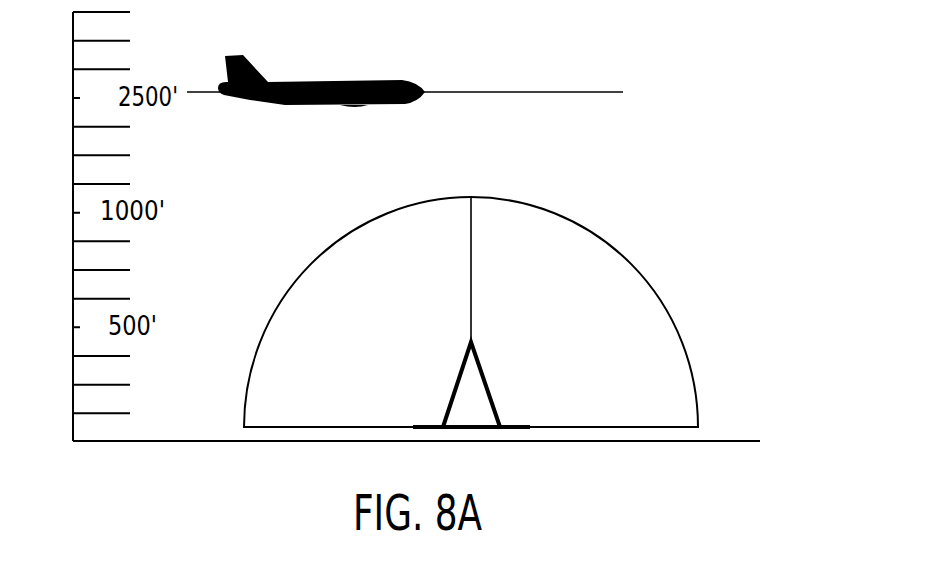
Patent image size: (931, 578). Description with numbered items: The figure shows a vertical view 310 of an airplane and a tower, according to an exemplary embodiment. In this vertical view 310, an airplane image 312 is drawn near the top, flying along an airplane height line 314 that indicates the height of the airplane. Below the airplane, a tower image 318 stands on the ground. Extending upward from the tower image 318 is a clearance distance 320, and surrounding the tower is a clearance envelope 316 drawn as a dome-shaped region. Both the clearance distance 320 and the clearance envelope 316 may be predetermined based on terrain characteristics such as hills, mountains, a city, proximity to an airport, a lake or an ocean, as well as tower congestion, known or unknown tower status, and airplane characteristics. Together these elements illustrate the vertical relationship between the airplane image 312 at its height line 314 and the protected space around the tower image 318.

The vertical view 310 is at (680, 54).
The airplane image 312 is at (343, 80).
The airplane height line 314 is at (549, 92).
The clearance envelope 316 is at (652, 287).
The tower image 318 is at (486, 383).
The clearance distance 320 is at (473, 260).